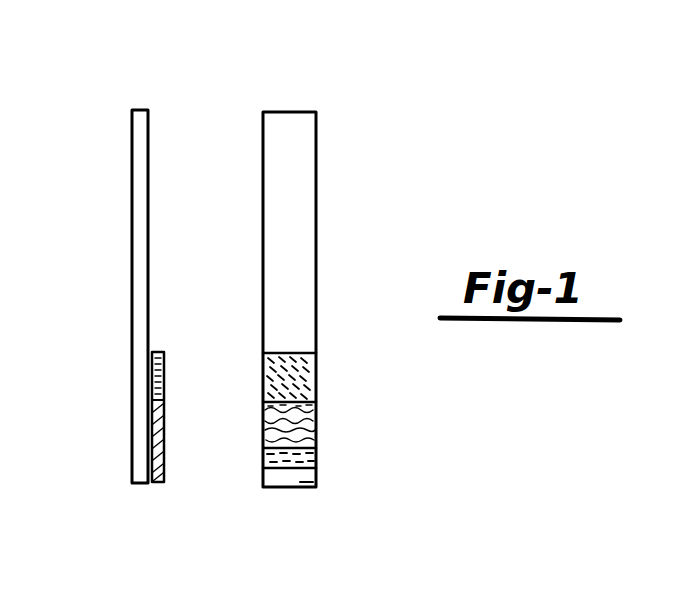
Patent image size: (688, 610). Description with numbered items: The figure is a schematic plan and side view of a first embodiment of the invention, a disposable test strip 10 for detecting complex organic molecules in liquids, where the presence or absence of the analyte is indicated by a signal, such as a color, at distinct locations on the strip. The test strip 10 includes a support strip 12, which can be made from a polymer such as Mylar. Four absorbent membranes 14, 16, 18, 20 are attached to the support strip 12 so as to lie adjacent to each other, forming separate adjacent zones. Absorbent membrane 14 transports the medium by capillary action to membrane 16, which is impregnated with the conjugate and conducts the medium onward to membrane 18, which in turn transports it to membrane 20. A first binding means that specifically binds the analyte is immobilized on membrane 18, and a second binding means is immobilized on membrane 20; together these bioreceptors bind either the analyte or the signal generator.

The test strip 10 is at (410, 187).
The support strip 12 is at (263, 128).
The absorbent membrane 14 is at (315, 484).
The absorbent membrane 16 is at (163, 458).
The absorbent membrane 18 is at (263, 430).
The absorbent membrane 20 is at (260, 365).